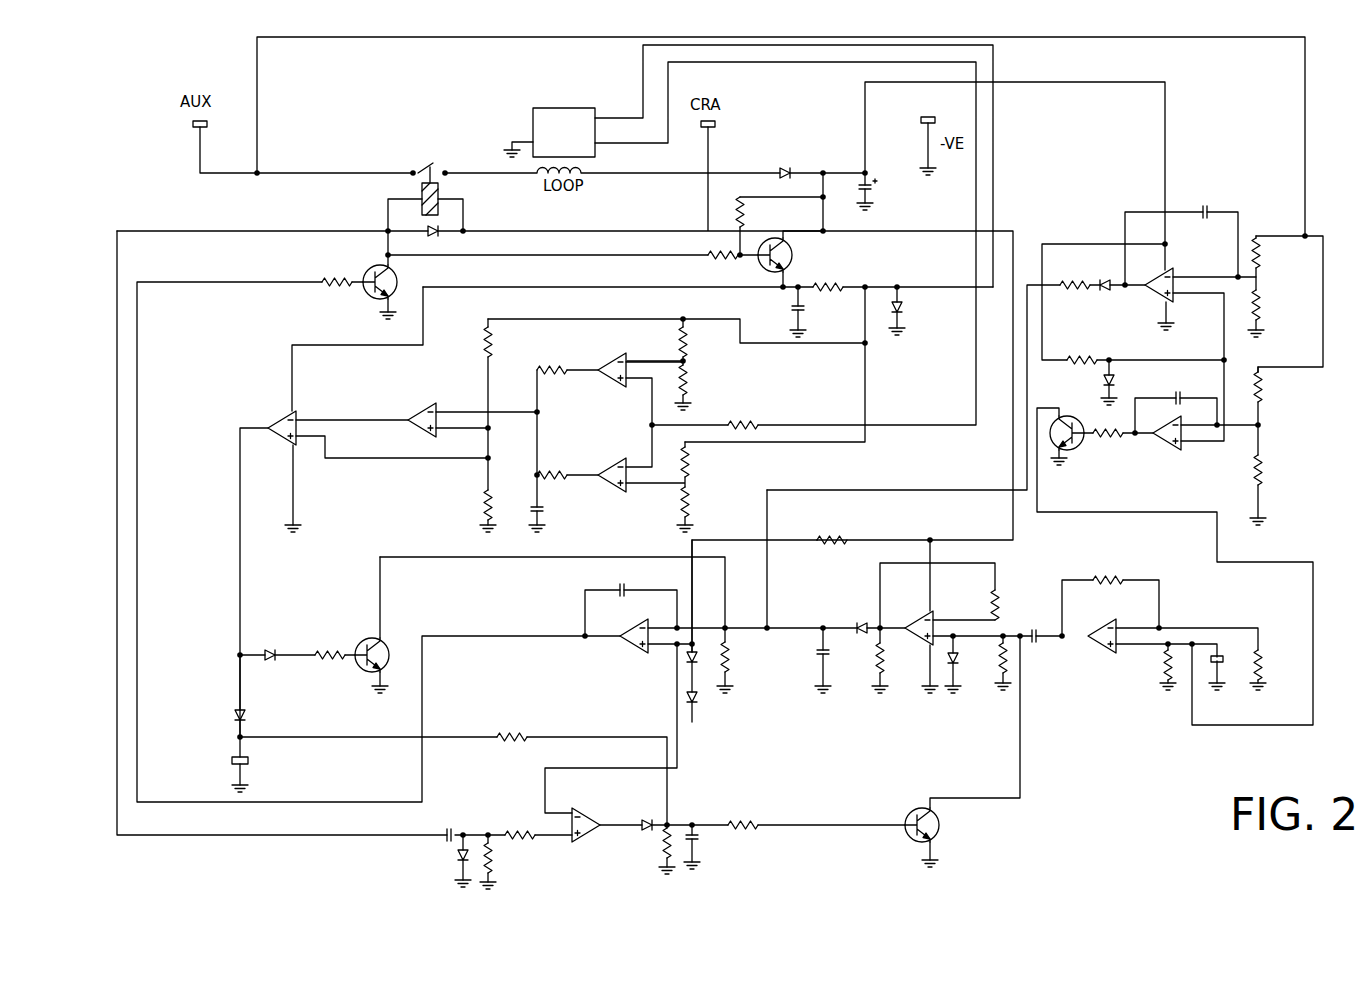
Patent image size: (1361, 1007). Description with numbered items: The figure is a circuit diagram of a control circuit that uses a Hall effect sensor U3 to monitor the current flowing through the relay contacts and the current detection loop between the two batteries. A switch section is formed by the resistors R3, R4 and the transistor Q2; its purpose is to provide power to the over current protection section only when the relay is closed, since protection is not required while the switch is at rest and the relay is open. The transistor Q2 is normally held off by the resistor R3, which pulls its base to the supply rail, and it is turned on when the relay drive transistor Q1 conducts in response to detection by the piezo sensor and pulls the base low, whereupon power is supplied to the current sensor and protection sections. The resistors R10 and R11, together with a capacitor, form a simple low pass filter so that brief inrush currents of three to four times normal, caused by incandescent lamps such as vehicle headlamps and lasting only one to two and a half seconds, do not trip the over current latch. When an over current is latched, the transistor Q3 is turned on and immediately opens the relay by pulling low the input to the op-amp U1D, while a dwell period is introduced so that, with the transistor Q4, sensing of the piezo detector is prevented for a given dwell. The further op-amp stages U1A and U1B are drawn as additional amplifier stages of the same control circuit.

The relay drive transistor Q1 is at (365, 282).
The transistor Q2 is at (792, 259).
The transistor Q3 is at (370, 625).
The transistor Q4 is at (945, 837).
The resistor R3 is at (779, 226).
The resistor R4 is at (712, 266).
The resistor R10 is at (553, 352).
The resistor R11 is at (560, 459).
The Hall effect sensor U3 is at (556, 108).
The op-amp stage U1A is at (924, 670).
The op-amp stage U1B is at (1103, 657).
The op-amp U1D is at (587, 626).